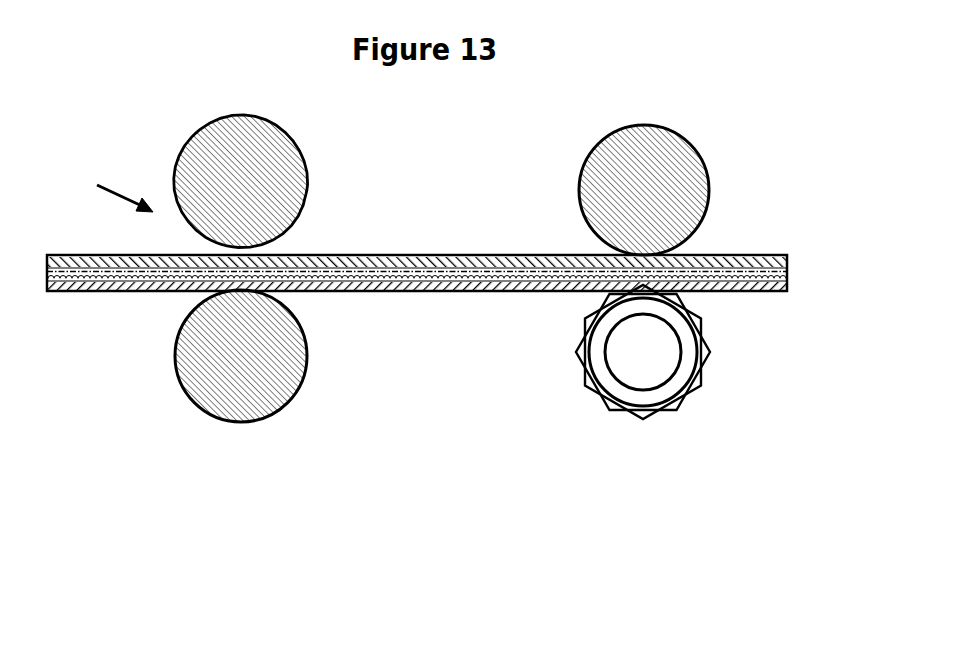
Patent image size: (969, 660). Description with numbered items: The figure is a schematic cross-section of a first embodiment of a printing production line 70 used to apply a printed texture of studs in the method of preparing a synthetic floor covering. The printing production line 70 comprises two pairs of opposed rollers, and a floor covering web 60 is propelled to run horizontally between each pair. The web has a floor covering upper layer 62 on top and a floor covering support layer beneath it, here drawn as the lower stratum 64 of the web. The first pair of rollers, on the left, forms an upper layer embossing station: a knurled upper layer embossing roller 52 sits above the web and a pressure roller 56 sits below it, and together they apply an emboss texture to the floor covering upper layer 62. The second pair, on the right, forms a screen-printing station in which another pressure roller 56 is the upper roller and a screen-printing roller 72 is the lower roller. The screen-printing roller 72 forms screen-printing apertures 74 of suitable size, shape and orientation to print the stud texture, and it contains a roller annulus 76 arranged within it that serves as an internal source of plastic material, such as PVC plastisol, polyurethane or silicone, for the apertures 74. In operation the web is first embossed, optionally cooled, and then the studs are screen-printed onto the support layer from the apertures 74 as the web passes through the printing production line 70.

The upper layer embossing roller 52 is at (250, 168).
The pressure roller 56 is at (652, 188).
The floor covering web 60 is at (467, 255).
The floor covering upper layer 62 is at (750, 255).
The second layer of laminate 64 is at (765, 292).
The printing production line 70 is at (103, 181).
The screen-printing roller 72 is at (592, 388).
The screen-printing apertures 74 is at (590, 341).
The roller annulus 76 is at (673, 392).